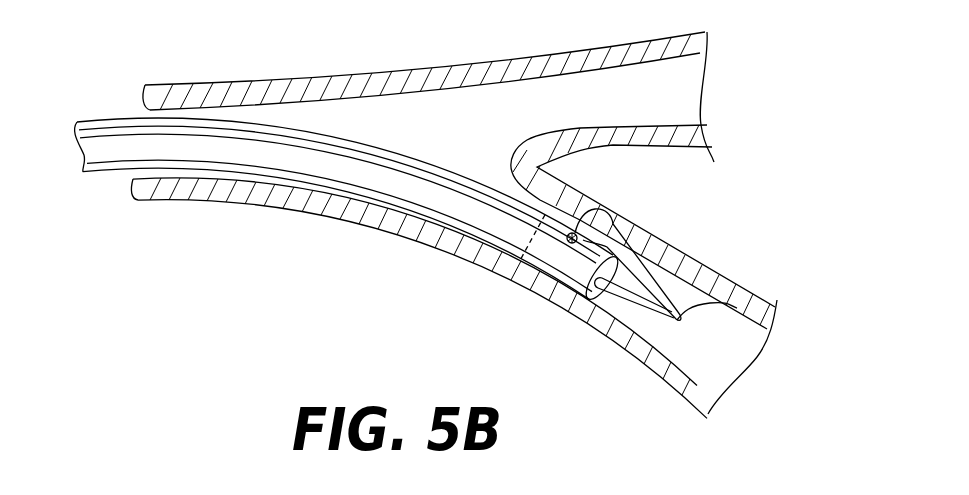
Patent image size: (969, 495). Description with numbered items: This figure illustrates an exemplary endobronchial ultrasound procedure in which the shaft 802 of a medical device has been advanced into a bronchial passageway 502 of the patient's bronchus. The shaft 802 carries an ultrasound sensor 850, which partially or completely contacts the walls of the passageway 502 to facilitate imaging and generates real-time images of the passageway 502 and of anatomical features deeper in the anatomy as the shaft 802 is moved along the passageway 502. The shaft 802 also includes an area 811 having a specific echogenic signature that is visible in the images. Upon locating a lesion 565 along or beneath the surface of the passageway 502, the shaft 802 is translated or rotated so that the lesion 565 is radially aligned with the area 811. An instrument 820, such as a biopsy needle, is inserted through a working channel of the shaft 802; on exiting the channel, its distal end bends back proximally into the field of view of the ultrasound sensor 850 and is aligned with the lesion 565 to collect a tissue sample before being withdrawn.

The bronchial passageway 502 is at (697, 368).
The instrument 820 is at (732, 299).
The shaft 802 is at (112, 152).
The ultrasound sensor 850 is at (555, 258).
The area 811 is at (582, 224).
The lesion 565 is at (604, 232).